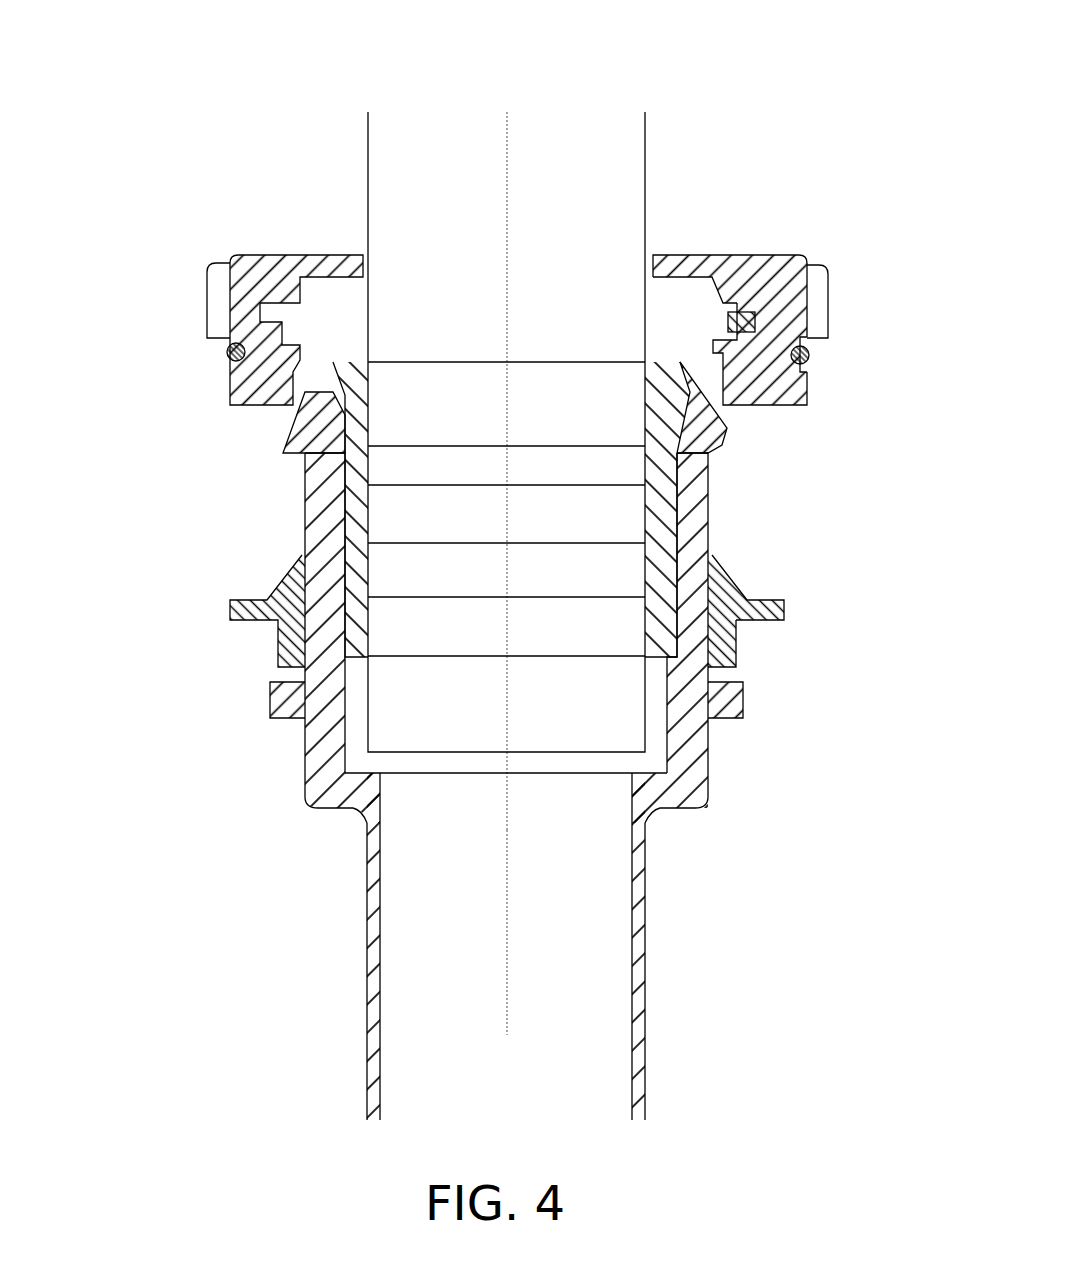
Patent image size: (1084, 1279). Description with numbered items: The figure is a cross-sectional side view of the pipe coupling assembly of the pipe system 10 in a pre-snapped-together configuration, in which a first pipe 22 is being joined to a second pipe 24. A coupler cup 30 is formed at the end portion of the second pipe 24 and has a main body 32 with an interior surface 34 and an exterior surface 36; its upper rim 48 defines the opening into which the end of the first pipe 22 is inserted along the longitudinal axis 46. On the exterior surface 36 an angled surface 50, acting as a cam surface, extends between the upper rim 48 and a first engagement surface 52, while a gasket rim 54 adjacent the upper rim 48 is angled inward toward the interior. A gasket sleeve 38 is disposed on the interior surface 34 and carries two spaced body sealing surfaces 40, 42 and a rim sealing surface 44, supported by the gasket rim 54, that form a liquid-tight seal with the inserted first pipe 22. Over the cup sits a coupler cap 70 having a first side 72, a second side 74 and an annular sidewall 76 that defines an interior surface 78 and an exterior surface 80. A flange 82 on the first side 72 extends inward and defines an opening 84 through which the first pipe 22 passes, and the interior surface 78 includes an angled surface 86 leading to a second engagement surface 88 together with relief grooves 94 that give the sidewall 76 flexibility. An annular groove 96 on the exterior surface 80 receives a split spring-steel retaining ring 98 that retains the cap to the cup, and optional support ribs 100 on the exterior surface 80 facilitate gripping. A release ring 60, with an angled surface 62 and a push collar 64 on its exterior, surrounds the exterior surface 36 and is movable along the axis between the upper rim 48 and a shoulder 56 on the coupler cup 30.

The pipe system 10 is at (48, 24).
The first pipe 22 is at (645, 125).
The second pipe 24 is at (645, 1063).
The coupler cup 30 is at (513, 528).
The main body 32 is at (710, 748).
The interior surface 34 is at (348, 725).
The exterior surface 36 is at (300, 543).
The gasket sleeve 38 is at (345, 628).
The body sealing surface 40 is at (370, 517).
The body sealing surface 42 is at (367, 637).
The rim sealing surface 44 is at (353, 362).
The longitudinal axis 46 is at (505, 937).
The upper rim 48 is at (317, 392).
The angled surface 50 is at (728, 428).
The first engagement surface 52 is at (722, 447).
The gasket rim 54 is at (668, 403).
The shoulder 56 is at (742, 700).
The release ring 60 is at (742, 658).
The angled surface 62 is at (735, 580).
The push collar 64 is at (780, 612).
The coupler cap 70 is at (668, 253).
The first side 72 is at (698, 256).
The second side 74 is at (770, 407).
The sidewall 76 is at (232, 285).
The interior surface 78 is at (717, 283).
The exterior surface 80 is at (808, 310).
The flange 82 is at (362, 270).
The opening 84 is at (467, 272).
The angled surface 86 is at (297, 377).
The second engagement surface 88 is at (297, 350).
The relief groove 94 is at (757, 308).
The annular groove 96 is at (226, 352).
The retaining ring 98 is at (810, 355).
The support ribs 100 is at (828, 272).